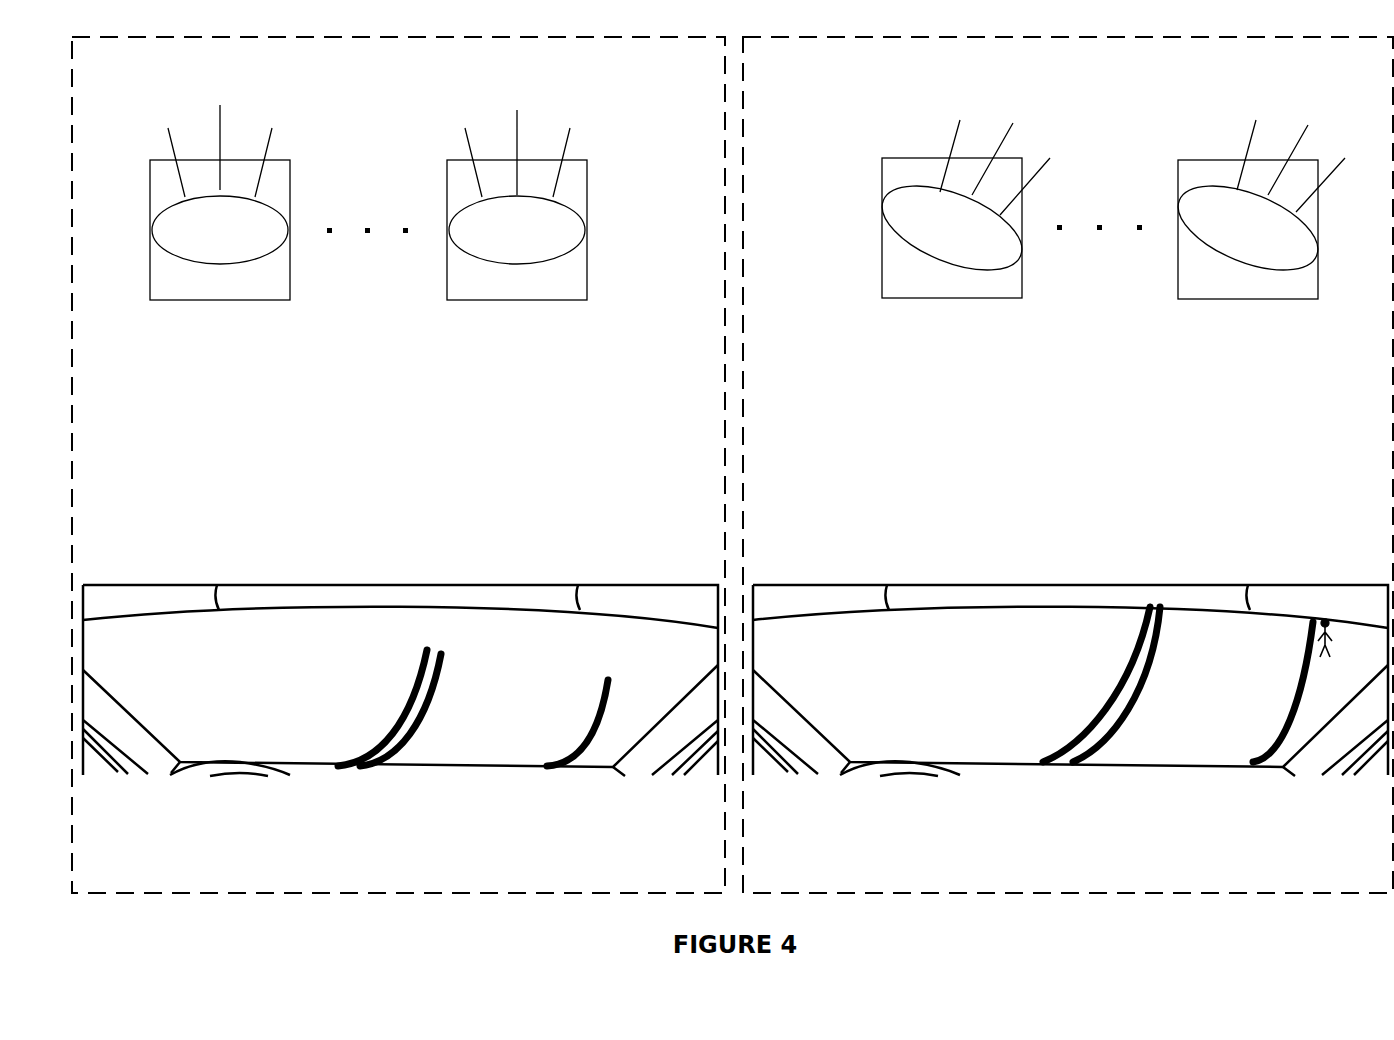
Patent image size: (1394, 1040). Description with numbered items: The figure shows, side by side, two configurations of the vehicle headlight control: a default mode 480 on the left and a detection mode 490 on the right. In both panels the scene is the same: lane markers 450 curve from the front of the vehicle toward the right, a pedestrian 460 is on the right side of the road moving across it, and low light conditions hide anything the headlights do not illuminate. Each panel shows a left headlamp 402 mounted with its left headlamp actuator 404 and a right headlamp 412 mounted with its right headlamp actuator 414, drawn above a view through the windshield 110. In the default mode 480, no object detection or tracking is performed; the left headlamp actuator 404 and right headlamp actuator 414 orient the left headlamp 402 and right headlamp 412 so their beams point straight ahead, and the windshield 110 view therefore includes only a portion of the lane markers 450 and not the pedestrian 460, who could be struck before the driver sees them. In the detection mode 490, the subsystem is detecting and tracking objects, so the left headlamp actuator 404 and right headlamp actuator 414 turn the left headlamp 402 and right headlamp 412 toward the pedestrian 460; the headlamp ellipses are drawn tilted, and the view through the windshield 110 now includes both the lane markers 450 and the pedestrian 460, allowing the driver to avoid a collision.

The windshield 110 is at (935, 547).
The left headlamp 402 is at (263, 257).
The left headlamp actuator 404 is at (230, 300).
The right headlamp 412 is at (568, 255).
The right headlamp actuator 414 is at (520, 300).
The lane markers 450 is at (597, 727).
The pedestrian 460 is at (1327, 617).
The default mode 480 is at (398, 465).
The detection mode 490 is at (1068, 465).